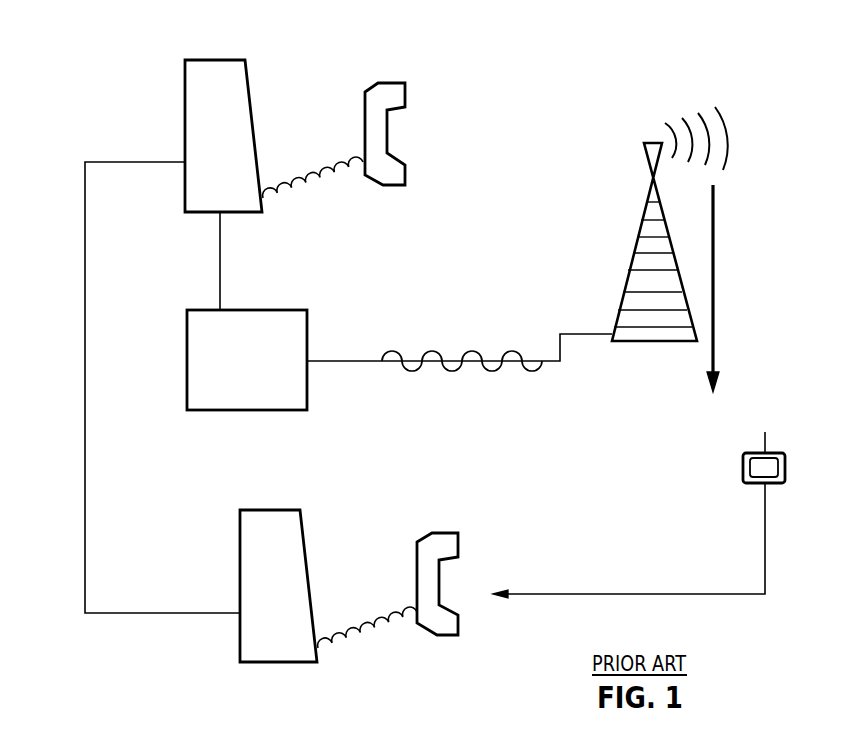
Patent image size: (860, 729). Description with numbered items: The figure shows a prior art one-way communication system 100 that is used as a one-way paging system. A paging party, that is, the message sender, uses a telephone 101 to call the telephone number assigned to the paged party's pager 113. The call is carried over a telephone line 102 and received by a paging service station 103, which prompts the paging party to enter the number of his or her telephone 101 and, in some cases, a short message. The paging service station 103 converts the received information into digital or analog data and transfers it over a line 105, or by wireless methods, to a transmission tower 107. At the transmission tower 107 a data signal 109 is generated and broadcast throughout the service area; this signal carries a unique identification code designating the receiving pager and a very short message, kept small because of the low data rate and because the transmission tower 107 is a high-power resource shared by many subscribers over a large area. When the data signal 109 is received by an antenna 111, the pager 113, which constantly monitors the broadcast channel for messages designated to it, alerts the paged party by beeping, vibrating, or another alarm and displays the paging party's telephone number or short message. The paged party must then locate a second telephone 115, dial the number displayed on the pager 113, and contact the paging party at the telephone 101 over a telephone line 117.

The one-way communication system 100 is at (470, 158).
The telephone 101 is at (226, 67).
The telephone line 102 is at (220, 250).
The paging service station 103 is at (287, 317).
The line 105 is at (497, 370).
The transmission tower 107 is at (650, 190).
The data signal 109 is at (723, 122).
The antenna 111 is at (768, 438).
The pager 113 is at (787, 472).
The second telephone 115 is at (285, 515).
The telephone line 117 is at (85, 407).